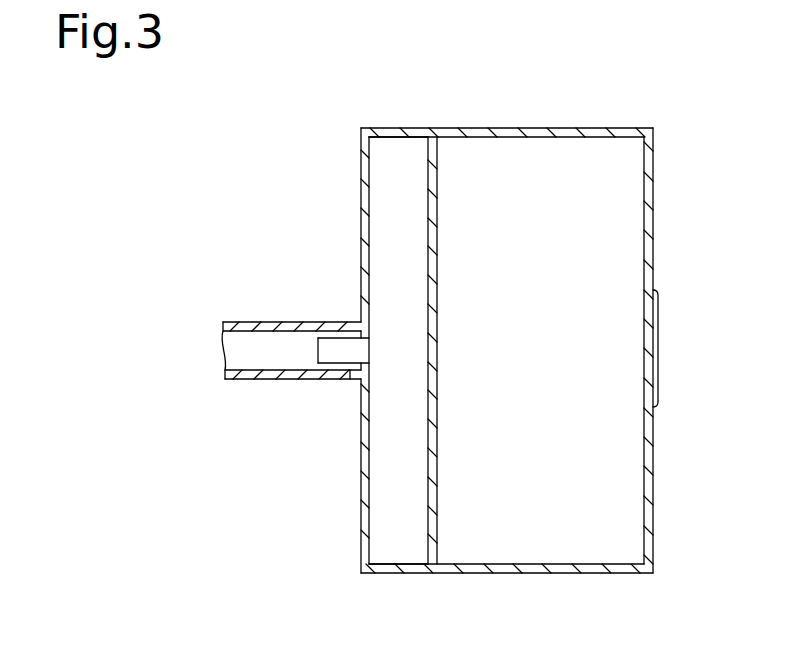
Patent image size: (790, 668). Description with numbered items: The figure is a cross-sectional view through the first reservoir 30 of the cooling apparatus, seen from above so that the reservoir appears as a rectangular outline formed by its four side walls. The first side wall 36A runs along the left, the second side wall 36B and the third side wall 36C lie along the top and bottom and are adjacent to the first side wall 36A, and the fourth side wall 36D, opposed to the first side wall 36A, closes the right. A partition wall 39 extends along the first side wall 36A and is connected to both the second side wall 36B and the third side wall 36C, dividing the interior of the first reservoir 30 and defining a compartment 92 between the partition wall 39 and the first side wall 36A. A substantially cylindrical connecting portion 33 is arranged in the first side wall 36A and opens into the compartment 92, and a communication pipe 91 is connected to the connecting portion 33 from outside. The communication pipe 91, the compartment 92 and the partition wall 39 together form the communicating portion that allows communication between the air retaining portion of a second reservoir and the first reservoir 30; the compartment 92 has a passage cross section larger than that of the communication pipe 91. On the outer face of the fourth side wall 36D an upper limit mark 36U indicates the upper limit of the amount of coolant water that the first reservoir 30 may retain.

The first reservoir 30 is at (510, 353).
The first side wall 36A is at (361, 193).
The second side wall 36B is at (505, 128).
The third side wall 36C is at (505, 573).
The fourth side wall 36D is at (653, 478).
The upper limit mark 36U is at (658, 305).
The partition wall 39 is at (437, 375).
The communication pipe 91 is at (272, 322).
The compartment 92 is at (397, 474).
The connecting portion 33 is at (334, 338).